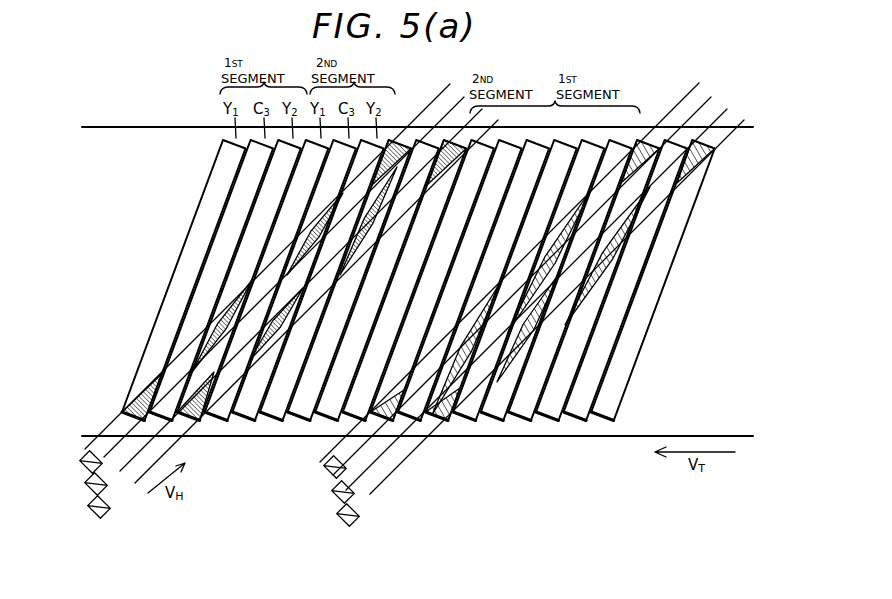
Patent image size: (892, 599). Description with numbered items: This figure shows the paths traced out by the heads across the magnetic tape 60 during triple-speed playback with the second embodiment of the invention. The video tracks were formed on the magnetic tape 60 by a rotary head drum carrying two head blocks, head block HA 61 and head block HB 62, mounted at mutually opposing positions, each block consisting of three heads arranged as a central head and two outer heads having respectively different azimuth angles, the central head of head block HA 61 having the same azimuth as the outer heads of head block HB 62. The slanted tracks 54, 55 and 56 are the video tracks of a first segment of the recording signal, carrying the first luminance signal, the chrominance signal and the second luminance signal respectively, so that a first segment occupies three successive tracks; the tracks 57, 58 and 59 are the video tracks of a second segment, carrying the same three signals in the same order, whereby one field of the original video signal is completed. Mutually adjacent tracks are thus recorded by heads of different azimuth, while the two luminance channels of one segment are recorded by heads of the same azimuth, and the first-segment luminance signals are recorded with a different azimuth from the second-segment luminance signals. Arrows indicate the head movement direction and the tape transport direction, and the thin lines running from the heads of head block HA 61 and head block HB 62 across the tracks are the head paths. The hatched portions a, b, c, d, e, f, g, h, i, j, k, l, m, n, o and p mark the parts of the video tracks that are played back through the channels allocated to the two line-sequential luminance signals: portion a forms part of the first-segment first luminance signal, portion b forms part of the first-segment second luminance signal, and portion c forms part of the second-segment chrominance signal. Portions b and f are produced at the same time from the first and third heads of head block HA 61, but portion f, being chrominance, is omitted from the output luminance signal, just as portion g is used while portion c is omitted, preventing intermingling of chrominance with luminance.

The video track of first segment 54 is at (184, 280).
The video track of first segment 55 is at (212, 280).
The video track of first segment 56 is at (239, 280).
The video track of second segment 57 is at (266, 280).
The video track of second segment 58 is at (294, 280).
The video track of second segment 59 is at (322, 280).
The magnetic tape 60 is at (417, 281).
The head block HA 61 is at (73, 501).
The head block HB 62 is at (323, 506).
The hatched-line portion a is at (136, 390).
The hatched-line portion b is at (238, 296).
The hatched-line portion c is at (292, 257).
The hatched-line portion d is at (407, 126).
The hatched-line portion e is at (193, 426).
The hatched-line portion f is at (272, 348).
The hatched-line portion g is at (365, 253).
The hatched-line portion h is at (446, 165).
The hatched-line portion i is at (387, 403).
The hatched-line portion j is at (482, 308).
The hatched-line portion k is at (566, 213).
The hatched-line portion l is at (657, 127).
The hatched-line portion m is at (438, 428).
The hatched-line portion n is at (533, 365).
The hatched-line portion o is at (600, 258).
The hatched-line portion p is at (706, 163).